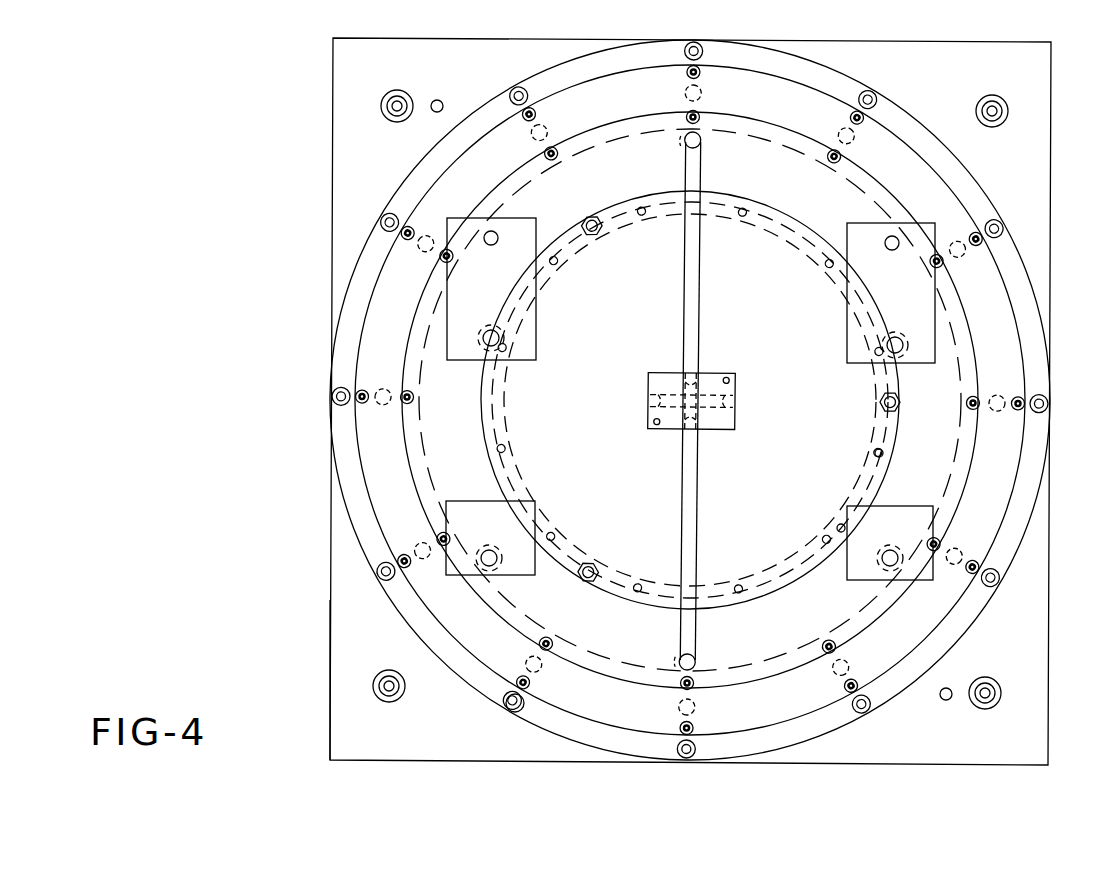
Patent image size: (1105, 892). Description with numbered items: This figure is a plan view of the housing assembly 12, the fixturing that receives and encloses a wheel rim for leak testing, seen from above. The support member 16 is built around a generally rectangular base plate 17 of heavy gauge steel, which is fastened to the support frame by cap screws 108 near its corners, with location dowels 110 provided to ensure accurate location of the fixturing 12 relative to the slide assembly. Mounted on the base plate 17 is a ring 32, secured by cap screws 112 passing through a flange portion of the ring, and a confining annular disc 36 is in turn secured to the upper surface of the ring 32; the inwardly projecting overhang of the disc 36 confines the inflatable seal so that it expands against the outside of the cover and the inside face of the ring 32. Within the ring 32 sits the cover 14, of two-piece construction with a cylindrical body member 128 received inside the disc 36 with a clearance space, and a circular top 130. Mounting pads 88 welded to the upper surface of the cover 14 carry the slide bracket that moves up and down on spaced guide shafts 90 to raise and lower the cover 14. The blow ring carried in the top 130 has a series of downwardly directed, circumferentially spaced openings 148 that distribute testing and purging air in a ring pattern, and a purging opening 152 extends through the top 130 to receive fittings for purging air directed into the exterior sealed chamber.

The housing assembly 12 is at (258, 603).
The cover 14 is at (408, 488).
The support member 16 is at (328, 204).
The base plate 17 is at (341, 668).
The ring 32 is at (455, 683).
The confining disc 36 is at (435, 593).
The mounting pads 88 is at (515, 218).
The guide shafts 90 is at (790, 588).
The cap screws 108 is at (381, 104).
The location dowels 110 is at (463, 88).
The cap screws 112 is at (520, 714).
The cylindrical body member 128 is at (400, 354).
The circular top 130 is at (592, 415).
The openings 148 is at (875, 456).
The purging opening 152 is at (697, 141).